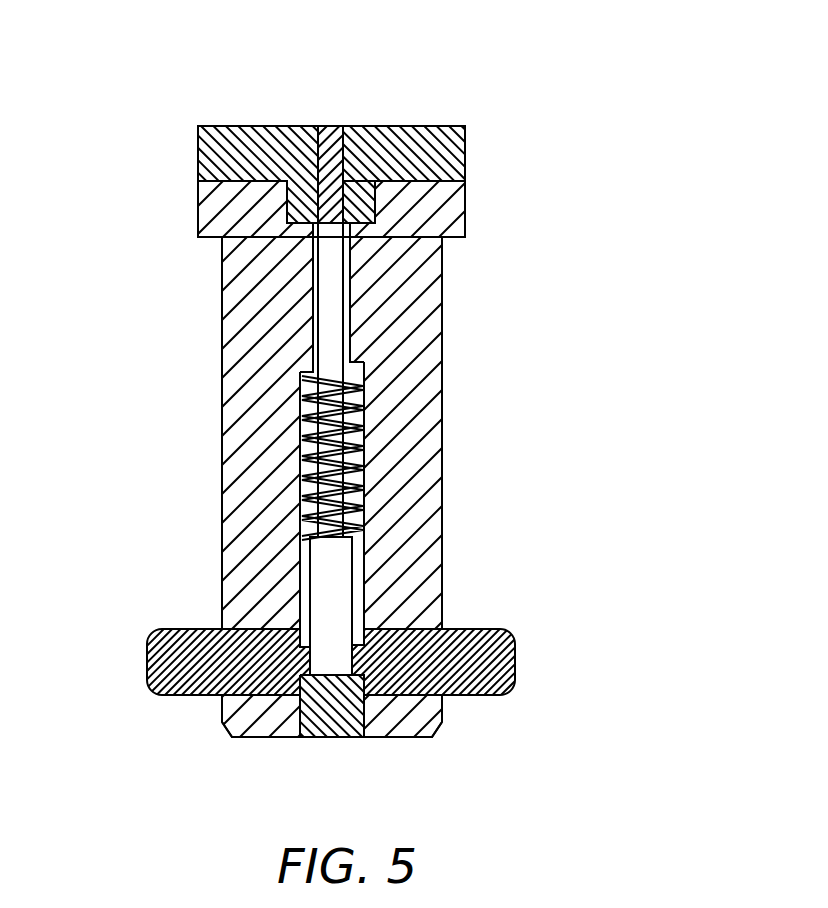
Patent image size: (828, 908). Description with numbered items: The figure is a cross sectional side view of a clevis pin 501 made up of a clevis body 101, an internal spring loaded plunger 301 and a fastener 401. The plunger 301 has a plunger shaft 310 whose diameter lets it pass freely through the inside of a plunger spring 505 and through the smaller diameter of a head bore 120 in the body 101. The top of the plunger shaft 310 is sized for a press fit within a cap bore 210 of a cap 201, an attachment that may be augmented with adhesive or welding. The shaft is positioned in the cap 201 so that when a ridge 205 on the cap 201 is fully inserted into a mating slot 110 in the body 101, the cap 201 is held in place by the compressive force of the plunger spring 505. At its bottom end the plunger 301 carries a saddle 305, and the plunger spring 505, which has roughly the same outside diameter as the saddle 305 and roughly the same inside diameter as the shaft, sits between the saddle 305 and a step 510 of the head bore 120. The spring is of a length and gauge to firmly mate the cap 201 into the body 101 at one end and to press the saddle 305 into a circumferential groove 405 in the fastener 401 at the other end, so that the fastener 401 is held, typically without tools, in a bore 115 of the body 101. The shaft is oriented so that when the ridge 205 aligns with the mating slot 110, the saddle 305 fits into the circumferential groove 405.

The clevis body 101 is at (245, 335).
The mating slot 110 is at (380, 186).
The bore 115 is at (443, 695).
The head bore 120 is at (330, 277).
The cap 201 is at (240, 155).
The ridge 205 is at (353, 220).
The cap bore 210 is at (307, 147).
The plunger 301 is at (328, 340).
The saddle 305 is at (327, 588).
The plunger shaft 310 is at (347, 277).
The fastener 401 is at (197, 665).
The circumferential groove 405 is at (363, 629).
The clevis pin 501 is at (545, 172).
The plunger spring 505 is at (300, 523).
The step 510 is at (353, 362).